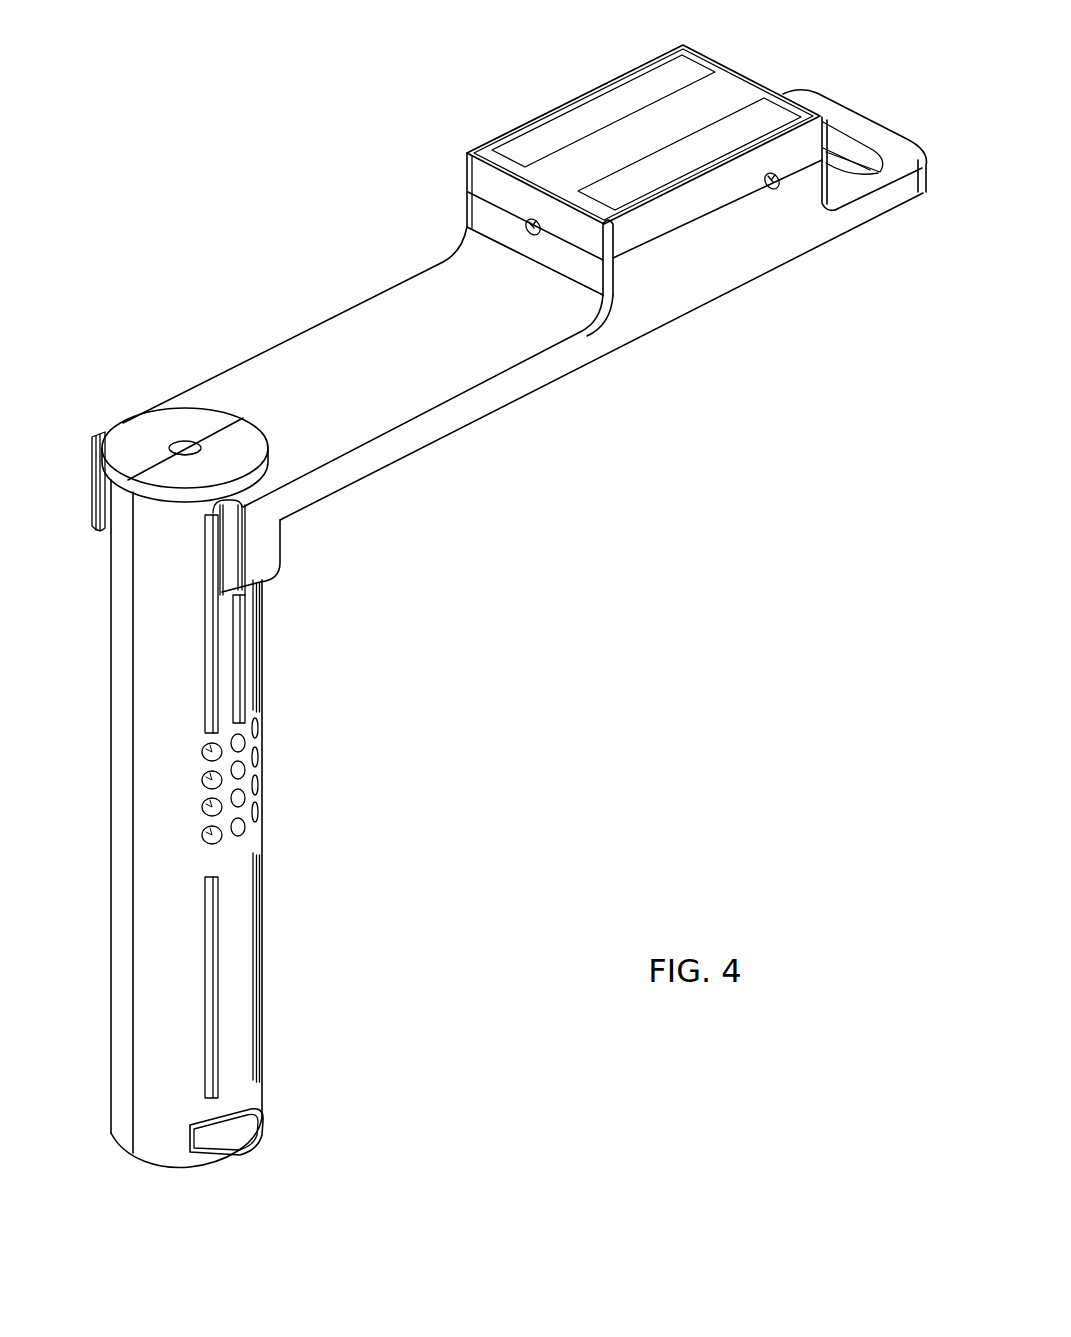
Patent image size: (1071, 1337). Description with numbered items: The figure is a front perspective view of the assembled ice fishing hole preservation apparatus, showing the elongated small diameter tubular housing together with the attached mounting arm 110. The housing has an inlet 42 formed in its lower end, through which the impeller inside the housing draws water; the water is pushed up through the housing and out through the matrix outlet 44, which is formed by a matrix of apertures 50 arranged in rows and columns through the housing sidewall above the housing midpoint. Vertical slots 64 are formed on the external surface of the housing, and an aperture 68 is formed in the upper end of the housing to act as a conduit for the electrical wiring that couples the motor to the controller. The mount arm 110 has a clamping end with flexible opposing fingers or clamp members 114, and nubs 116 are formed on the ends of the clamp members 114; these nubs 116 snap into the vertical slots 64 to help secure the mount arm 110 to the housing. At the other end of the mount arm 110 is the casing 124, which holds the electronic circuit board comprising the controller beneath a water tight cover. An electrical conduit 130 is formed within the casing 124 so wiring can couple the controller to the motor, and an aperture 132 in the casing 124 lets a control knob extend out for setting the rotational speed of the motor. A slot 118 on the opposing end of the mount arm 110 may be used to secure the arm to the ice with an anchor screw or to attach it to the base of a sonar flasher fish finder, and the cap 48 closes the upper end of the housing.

The inlet 42 is at (233, 1130).
The matrix outlet 44 is at (284, 780).
The cap 48 is at (133, 432).
The apertures 50 is at (206, 752).
The vertical slots 64 is at (240, 688).
The aperture 68 is at (186, 442).
The mounting arm 110 is at (382, 332).
The clamp members 114 is at (268, 548).
The nubs 116 is at (103, 505).
The mounting slot 118 is at (860, 192).
The casing 124 is at (660, 295).
The electrical conduit 130 is at (528, 225).
The aperture 132 is at (774, 187).